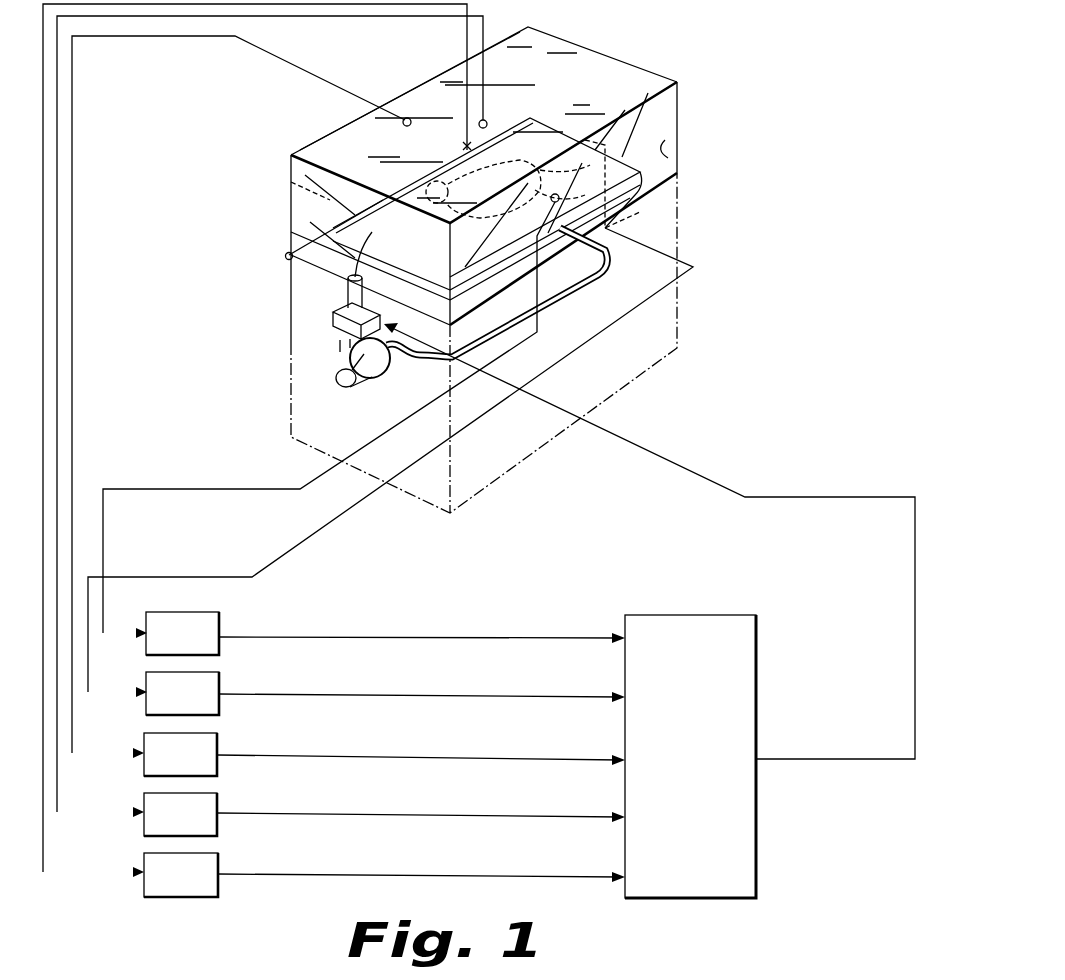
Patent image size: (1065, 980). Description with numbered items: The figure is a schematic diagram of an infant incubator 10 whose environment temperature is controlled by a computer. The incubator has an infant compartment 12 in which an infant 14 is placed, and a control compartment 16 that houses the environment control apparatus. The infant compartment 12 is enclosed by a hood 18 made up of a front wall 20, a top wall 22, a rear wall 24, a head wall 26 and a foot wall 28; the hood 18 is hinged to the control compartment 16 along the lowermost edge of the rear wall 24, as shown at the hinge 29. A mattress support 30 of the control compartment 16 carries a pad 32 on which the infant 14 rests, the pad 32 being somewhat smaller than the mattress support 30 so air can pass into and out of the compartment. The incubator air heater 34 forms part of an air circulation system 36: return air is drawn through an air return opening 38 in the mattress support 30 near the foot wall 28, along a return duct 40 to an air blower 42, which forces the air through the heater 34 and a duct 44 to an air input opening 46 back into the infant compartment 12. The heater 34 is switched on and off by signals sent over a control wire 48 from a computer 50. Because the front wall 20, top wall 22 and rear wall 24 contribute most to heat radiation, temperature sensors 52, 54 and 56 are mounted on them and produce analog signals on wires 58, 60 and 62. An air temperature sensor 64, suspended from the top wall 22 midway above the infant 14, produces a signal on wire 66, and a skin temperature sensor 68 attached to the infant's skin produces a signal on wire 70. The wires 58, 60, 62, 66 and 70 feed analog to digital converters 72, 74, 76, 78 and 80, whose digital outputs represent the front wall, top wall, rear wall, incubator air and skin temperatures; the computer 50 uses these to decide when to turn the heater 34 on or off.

The incubator 10 is at (704, 230).
The infant compartment 12 is at (663, 118).
The infant 14 is at (447, 180).
The control compartment 16 is at (678, 300).
The hood 18 is at (685, 72).
The front wall 20 is at (677, 150).
The top wall 22 is at (612, 77).
The rear wall 24 is at (291, 182).
The head wall 26 is at (298, 224).
The foot wall 28 is at (655, 73).
The hinge 29 is at (287, 258).
The mattress support 30 is at (330, 276).
The pad 32 is at (670, 198).
The incubator air heater 34 is at (333, 335).
The air circulation system 36 is at (378, 398).
The air return opening 38 is at (618, 150).
The return duct 40 is at (592, 262).
The air blower 42 is at (345, 368).
The duct 44 is at (349, 295).
The air input opening 46 is at (357, 274).
The control wire 48 is at (648, 452).
The computer 50 is at (757, 614).
The front wall temperature sensor 52 is at (552, 202).
The top wall temperature sensor 54 is at (487, 123).
The rear wall temperature sensor 56 is at (406, 117).
The wire 58 is at (563, 355).
The wire 60 is at (414, 18).
The wire 62 is at (248, 36).
The air temperature sensor 64 is at (485, 190).
The wire 66 is at (382, 4).
The skin temperature sensor 68 is at (467, 270).
The wire 70 is at (540, 325).
The analog to digital converter 72 is at (220, 674).
The analog to digital converter 74 is at (220, 794).
The analog to digital converter 76 is at (220, 733).
The analog to digital converter 78 is at (220, 853).
The analog to digital converter 80 is at (223, 613).